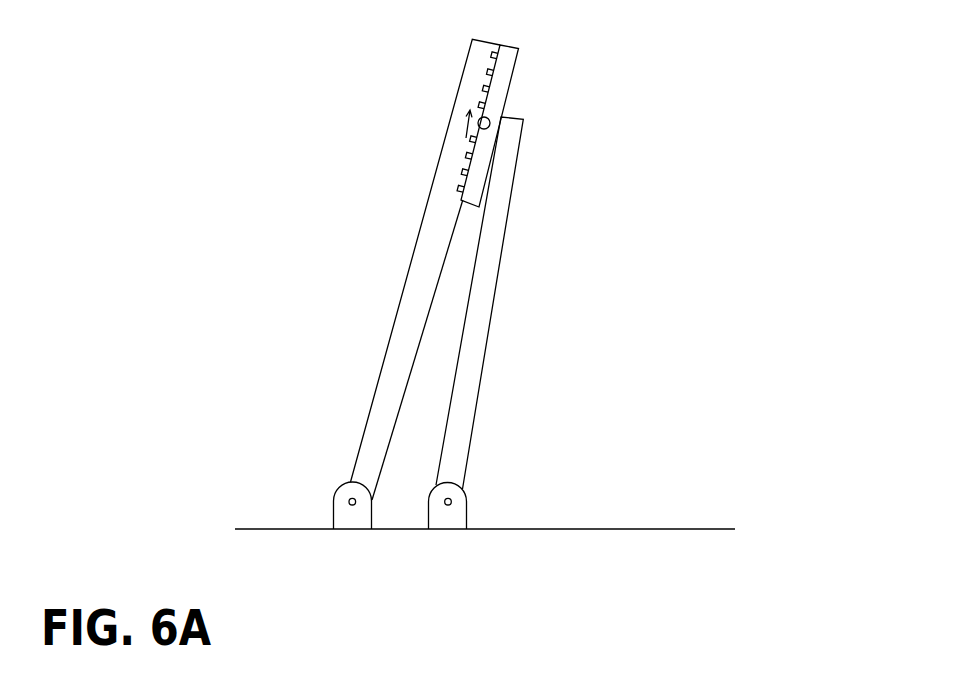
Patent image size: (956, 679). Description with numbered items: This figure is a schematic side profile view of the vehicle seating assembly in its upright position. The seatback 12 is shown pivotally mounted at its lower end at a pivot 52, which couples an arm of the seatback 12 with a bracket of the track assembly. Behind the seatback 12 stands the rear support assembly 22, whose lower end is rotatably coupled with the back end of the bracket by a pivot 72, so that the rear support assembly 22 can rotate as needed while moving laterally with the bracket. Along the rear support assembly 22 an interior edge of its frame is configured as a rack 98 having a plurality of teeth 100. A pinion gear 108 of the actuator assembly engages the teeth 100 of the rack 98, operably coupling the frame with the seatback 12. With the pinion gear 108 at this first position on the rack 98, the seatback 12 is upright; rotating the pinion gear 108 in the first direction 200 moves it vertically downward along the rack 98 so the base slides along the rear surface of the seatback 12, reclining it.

The seatback 12 is at (406, 310).
The rear support assembly 22 is at (480, 315).
The pivot 52 is at (352, 505).
The pivot 72 is at (453, 504).
The rack 98 is at (480, 90).
The teeth 100 is at (497, 58).
The pinion gear 108 is at (492, 128).
The first direction 200 is at (468, 125).